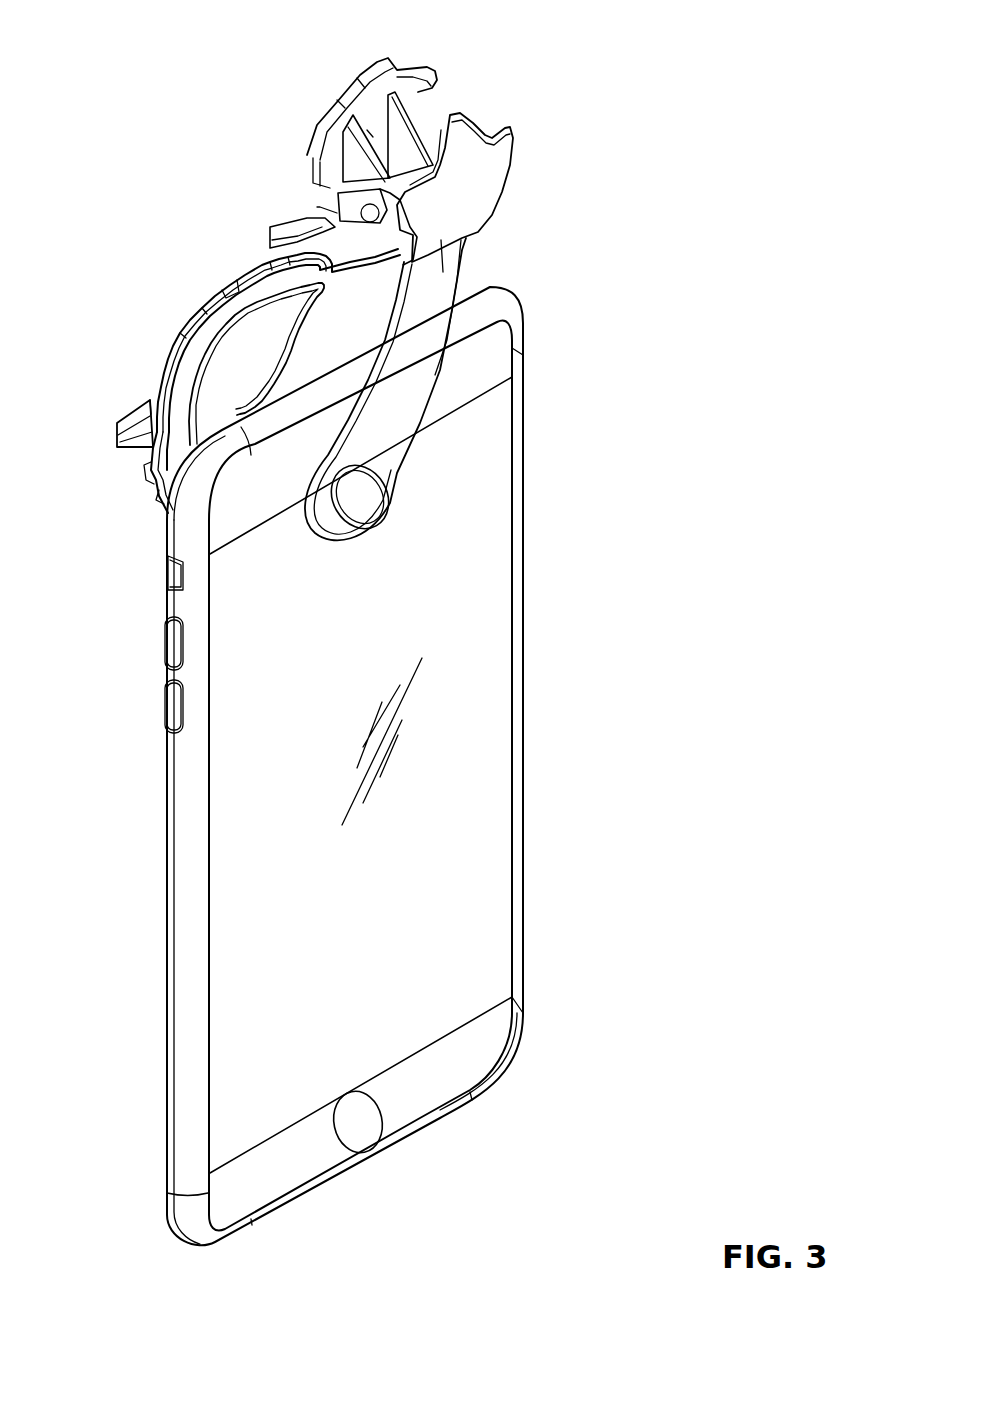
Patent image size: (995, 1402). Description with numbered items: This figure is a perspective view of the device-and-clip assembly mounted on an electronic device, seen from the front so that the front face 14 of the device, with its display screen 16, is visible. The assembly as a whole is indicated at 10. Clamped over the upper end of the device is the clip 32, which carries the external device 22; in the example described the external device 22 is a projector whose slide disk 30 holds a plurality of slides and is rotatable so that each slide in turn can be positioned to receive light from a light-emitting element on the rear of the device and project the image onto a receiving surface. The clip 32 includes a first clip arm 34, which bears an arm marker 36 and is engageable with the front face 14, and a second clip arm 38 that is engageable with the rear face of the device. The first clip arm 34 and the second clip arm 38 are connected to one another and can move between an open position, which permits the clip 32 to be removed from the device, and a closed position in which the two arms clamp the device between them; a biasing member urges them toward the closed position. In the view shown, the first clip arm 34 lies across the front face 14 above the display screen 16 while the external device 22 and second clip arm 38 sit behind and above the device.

The lens attachment assembly 10 is at (300, 50).
The front face 14 is at (187, 1007).
The display screen 16 is at (245, 882).
The external device 22 is at (220, 363).
The slide disk 30 is at (200, 302).
The clip 32 is at (292, 155).
The first clip arm 34 is at (447, 267).
The arm marker 36 is at (357, 497).
The second clip arm 38 is at (418, 92).